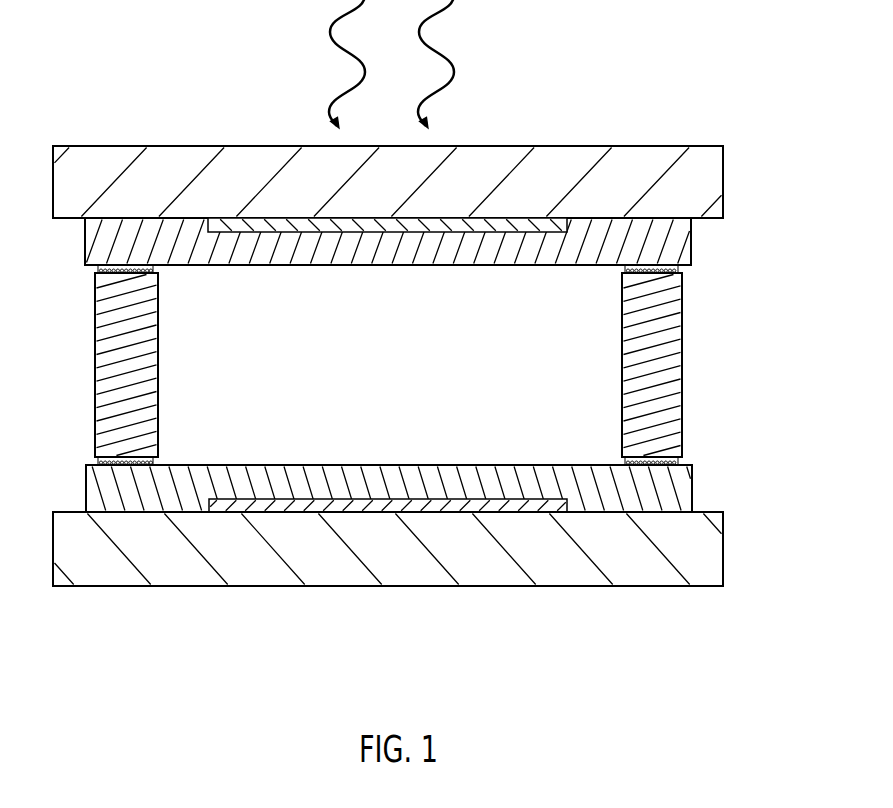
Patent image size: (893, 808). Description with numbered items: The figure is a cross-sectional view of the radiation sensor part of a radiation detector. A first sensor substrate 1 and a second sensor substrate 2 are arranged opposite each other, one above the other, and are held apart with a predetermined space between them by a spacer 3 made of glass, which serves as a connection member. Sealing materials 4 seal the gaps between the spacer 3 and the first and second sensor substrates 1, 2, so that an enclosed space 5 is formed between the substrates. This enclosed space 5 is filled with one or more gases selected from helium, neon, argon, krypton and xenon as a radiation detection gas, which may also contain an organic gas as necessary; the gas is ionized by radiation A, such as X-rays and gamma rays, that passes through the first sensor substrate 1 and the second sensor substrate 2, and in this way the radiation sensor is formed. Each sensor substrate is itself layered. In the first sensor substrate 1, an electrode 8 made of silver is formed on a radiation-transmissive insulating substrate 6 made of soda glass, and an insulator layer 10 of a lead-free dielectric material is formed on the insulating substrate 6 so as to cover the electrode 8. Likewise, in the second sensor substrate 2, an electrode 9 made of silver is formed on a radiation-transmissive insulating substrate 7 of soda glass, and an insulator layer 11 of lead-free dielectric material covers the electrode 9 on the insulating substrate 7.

The first sensor substrate 1 is at (407, 164).
The second sensor substrate 2 is at (408, 570).
The spacer 3 is at (113, 359).
The sealing materials 4 is at (97, 268).
The enclosed space 5 is at (533, 415).
The insulating substrate 6 is at (700, 184).
The insulating substrate 7 is at (683, 553).
The electrode 8 is at (535, 233).
The electrode 9 is at (565, 503).
The insulator layer 10 is at (673, 242).
The insulator layer 11 is at (673, 490).
The radiation A is at (453, 0).